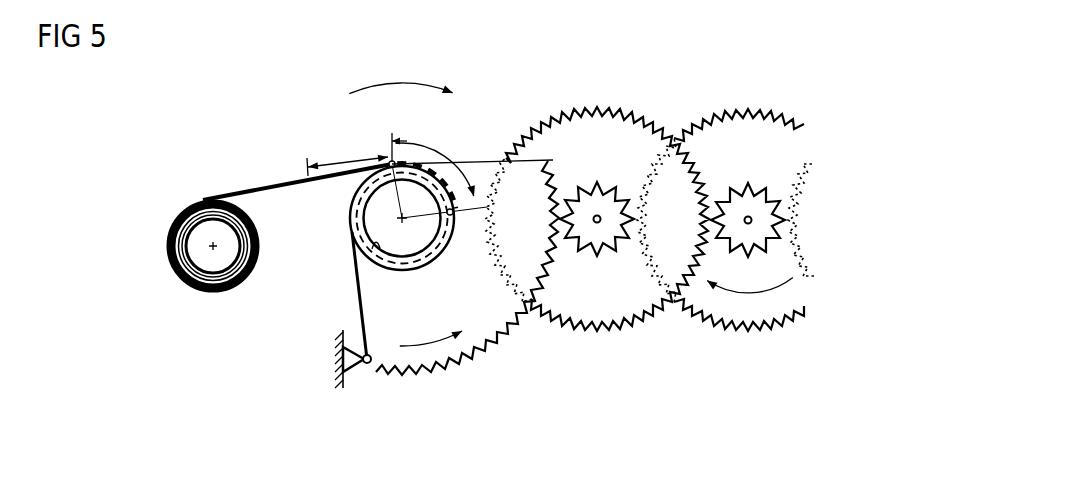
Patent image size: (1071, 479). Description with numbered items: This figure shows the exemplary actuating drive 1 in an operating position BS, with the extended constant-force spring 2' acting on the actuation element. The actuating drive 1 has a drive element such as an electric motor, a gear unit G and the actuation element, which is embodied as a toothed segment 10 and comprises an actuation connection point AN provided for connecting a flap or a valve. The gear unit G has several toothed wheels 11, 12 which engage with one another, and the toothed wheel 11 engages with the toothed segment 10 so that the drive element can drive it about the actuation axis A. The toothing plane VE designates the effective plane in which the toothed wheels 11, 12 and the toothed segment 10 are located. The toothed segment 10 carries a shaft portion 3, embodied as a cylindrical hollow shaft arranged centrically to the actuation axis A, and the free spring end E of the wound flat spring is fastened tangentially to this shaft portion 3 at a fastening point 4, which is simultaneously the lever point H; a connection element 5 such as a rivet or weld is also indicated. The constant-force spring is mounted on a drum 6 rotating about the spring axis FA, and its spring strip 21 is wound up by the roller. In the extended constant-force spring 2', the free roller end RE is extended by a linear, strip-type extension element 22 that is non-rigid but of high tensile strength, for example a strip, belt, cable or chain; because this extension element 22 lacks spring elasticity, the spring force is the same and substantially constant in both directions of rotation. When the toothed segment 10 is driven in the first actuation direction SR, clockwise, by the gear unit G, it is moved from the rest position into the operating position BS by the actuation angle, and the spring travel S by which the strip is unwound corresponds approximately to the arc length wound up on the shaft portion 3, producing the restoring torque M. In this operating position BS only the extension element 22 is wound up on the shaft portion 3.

The actuating drive 1 is at (690, 84).
The extended constant-force spring 2' is at (213, 290).
The shaft portion 3 is at (438, 260).
The fastening point 4 is at (453, 217).
The connection element 5 is at (395, 189).
The drum 6 is at (241, 268).
The toothed segment 10 is at (507, 343).
The transmission toothed wheel 11 is at (590, 333).
The transmission toothed wheel 12 is at (768, 335).
The spring strip 21 is at (238, 191).
The extension element 22 is at (457, 192).
The spring axis FA is at (208, 251).
The operating position BS is at (342, 358).
The actuation axis A is at (397, 226).
The actuation connection point AN is at (368, 250).
The roller end RE is at (378, 168).
The spring travel S is at (347, 155).
The lever point H is at (396, 160).
The first actuation direction SR is at (401, 73).
The restoring torque M is at (431, 327).
The toothing plane VE is at (540, 212).
The free spring end E is at (454, 214).
The gear unit G is at (678, 335).